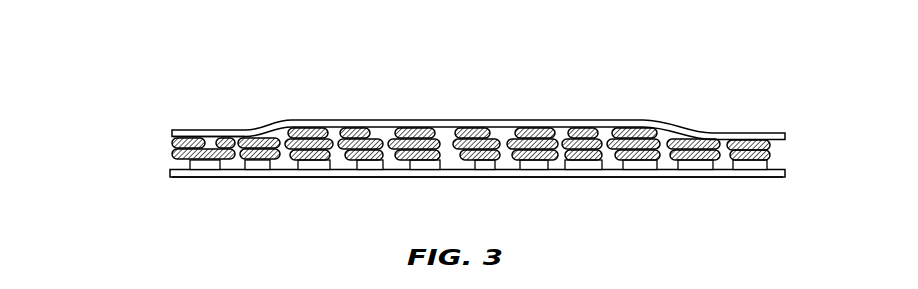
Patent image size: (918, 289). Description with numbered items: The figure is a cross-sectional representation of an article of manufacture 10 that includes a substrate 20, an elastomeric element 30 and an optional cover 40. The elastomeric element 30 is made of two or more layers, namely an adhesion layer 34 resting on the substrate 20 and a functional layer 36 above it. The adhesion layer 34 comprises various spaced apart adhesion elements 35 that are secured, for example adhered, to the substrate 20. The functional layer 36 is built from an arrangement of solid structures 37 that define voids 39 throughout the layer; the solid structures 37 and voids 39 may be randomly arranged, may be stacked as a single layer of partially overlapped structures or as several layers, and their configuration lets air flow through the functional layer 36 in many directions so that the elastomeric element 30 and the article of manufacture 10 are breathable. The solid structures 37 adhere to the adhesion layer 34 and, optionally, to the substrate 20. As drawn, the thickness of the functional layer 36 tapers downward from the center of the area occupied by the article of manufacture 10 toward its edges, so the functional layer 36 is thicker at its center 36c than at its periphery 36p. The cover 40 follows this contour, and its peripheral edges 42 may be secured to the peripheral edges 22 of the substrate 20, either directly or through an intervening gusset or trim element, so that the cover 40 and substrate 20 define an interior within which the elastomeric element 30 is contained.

The article of manufacture 10 is at (107, 60).
The substrate 20 is at (207, 175).
The peripheral edges of the substrate 22 is at (787, 175).
The elastomeric element 30 is at (72, 112).
The adhesion layer 34 is at (140, 164).
The adhesion elements 35 is at (289, 168).
The functional layer 36 is at (140, 140).
The center of the functional layer 36c is at (562, 119).
The periphery of the functional layer 36p is at (757, 131).
The solid structures 37 is at (338, 127).
The voids 39 is at (385, 137).
The cover 40 is at (198, 135).
The peripheral edges of the cover 42 is at (787, 137).